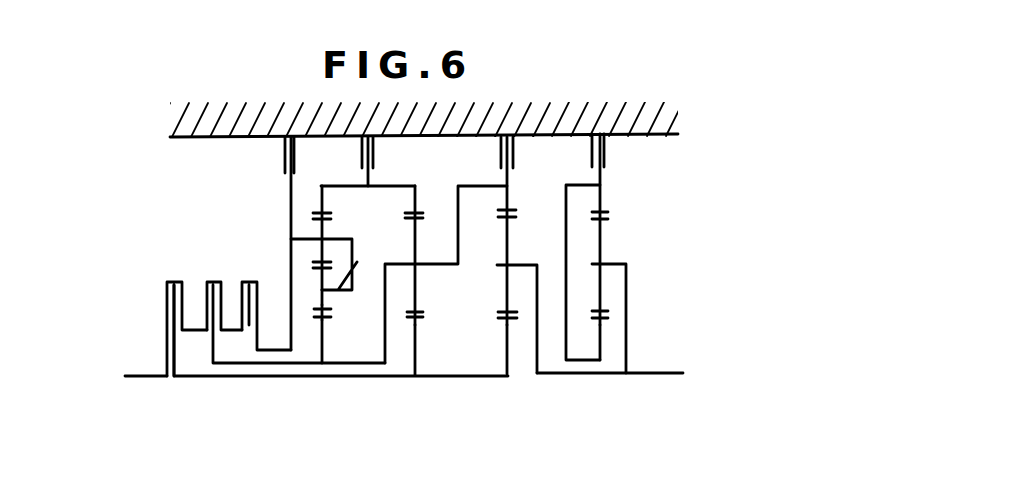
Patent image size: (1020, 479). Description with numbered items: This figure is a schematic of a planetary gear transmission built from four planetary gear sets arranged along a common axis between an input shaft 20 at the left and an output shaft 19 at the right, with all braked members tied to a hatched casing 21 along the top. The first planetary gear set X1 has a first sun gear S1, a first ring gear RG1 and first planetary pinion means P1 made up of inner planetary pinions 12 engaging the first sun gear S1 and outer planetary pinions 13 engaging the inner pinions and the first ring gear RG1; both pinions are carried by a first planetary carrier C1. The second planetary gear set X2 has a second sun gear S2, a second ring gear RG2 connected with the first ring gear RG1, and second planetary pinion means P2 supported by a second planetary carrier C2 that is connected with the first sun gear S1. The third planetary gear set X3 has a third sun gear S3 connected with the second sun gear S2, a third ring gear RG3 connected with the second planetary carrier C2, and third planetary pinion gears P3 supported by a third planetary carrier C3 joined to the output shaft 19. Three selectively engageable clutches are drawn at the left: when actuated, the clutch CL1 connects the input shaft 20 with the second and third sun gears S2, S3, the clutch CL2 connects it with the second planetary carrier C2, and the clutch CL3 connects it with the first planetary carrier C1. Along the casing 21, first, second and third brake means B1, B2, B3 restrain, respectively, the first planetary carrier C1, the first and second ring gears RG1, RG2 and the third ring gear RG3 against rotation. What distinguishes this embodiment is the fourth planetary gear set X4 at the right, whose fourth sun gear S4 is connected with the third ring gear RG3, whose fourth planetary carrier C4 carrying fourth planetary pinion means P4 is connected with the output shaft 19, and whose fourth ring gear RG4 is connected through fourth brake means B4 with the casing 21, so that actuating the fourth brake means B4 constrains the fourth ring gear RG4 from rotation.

The casing 21 is at (185, 137).
The input shaft 20 is at (143, 378).
The output shaft 19 is at (660, 373).
The first clutch CL1 is at (171, 280).
The second clutch CL2 is at (213, 282).
The third clutch CL3 is at (250, 282).
The first brake means B1 is at (283, 155).
The second brake means B2 is at (362, 157).
The third brake means B3 is at (503, 157).
The fourth brake means B4 is at (607, 157).
The first ring gear RG1 is at (323, 205).
The second ring gear RG2 is at (415, 200).
The third ring gear RG3 is at (507, 197).
The fourth ring gear RG4 is at (598, 198).
The first planetary carrier C1 is at (335, 240).
The second planetary carrier C2 is at (428, 263).
The third planetary carrier C3 is at (519, 263).
The fourth planetary carrier C4 is at (610, 263).
The first planetary pinion means P1 is at (331, 308).
The second planetary pinion means P2 is at (417, 283).
The third planetary pinion gears P3 is at (505, 293).
The fourth planetary pinion means P4 is at (602, 287).
The first sun gear S1 is at (327, 342).
The second sun gear S2 is at (418, 345).
The third sun gear S3 is at (508, 355).
The fourth sun gear S4 is at (603, 340).
The inner planetary pinions 12 is at (322, 292).
The outer planetary pinions 13 is at (322, 244).
The first planetary gear set X1 is at (312, 337).
The second planetary gear set X2 is at (408, 348).
The third planetary gear set X3 is at (496, 341).
The fourth planetary gear set X4 is at (595, 341).